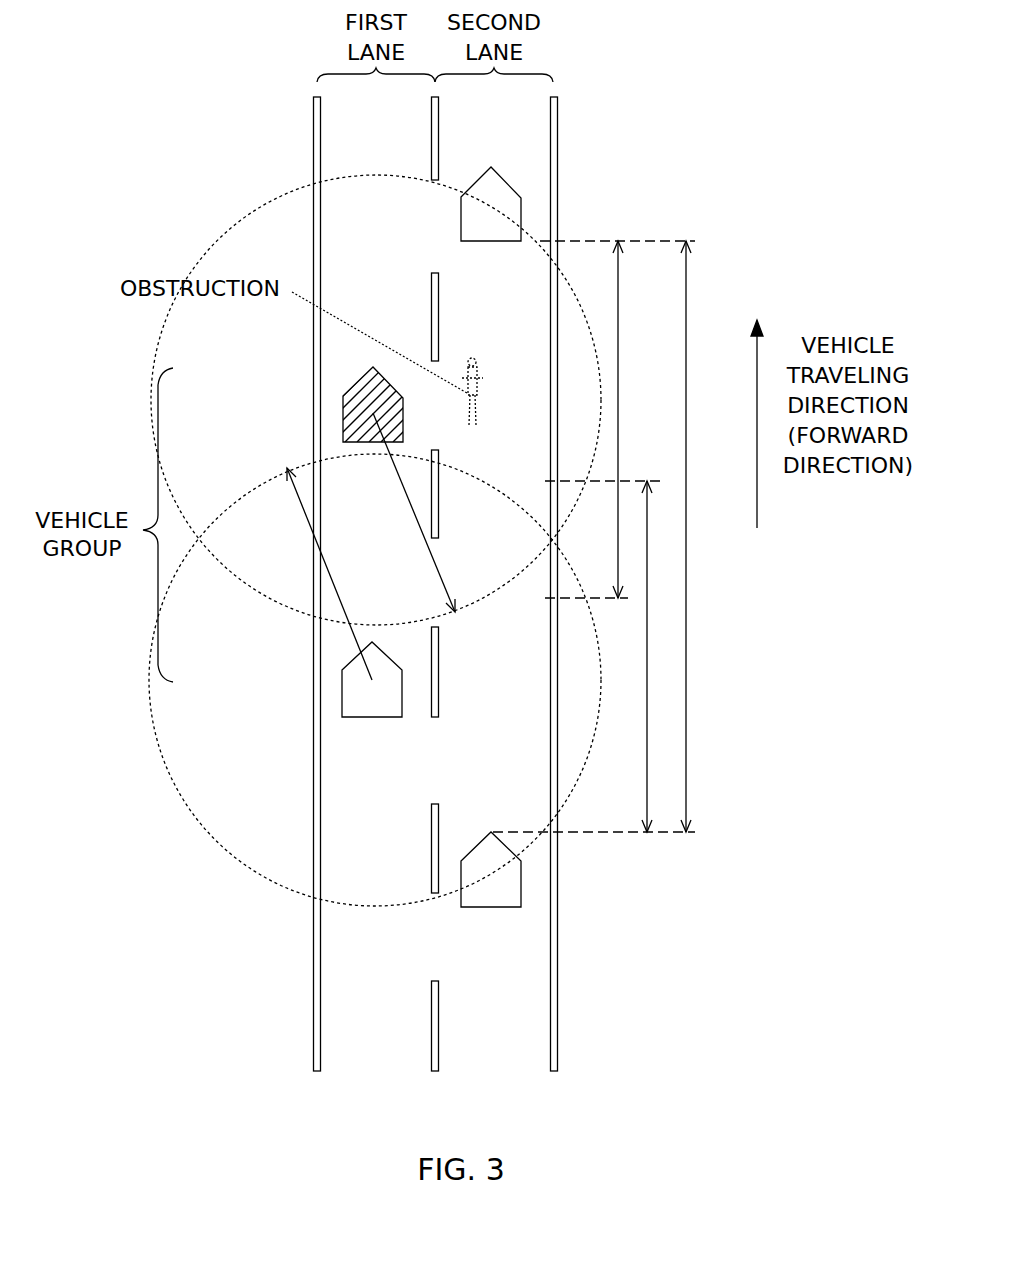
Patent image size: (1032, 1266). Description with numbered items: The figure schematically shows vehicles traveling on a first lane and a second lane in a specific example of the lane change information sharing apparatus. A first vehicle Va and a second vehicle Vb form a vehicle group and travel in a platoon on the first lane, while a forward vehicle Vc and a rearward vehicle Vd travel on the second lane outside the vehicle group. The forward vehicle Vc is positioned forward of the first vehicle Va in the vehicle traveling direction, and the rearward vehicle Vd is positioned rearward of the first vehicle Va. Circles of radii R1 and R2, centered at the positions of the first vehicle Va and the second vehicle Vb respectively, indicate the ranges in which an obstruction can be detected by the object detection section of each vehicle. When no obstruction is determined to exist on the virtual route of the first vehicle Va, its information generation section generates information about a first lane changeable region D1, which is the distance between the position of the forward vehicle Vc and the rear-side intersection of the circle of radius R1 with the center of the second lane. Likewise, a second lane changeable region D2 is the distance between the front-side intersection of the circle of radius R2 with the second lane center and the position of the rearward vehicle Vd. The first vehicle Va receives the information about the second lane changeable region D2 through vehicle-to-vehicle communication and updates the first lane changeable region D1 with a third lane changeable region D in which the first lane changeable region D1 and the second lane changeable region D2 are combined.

The first vehicle Va is at (343, 415).
The second vehicle Vb is at (343, 693).
The forward vehicle Vc is at (521, 210).
The rearward vehicle Vd is at (521, 888).
The radius R1 is at (428, 512).
The radius R2 is at (317, 574).
The first lane changeable region D1 is at (635, 419).
The second lane changeable region D2 is at (661, 656).
The third lane changeable region D is at (698, 536).